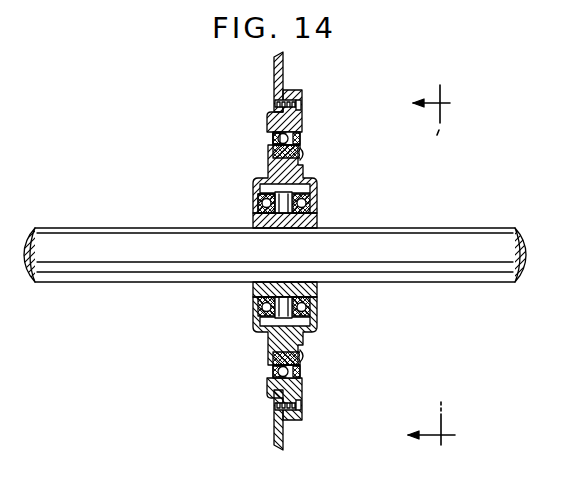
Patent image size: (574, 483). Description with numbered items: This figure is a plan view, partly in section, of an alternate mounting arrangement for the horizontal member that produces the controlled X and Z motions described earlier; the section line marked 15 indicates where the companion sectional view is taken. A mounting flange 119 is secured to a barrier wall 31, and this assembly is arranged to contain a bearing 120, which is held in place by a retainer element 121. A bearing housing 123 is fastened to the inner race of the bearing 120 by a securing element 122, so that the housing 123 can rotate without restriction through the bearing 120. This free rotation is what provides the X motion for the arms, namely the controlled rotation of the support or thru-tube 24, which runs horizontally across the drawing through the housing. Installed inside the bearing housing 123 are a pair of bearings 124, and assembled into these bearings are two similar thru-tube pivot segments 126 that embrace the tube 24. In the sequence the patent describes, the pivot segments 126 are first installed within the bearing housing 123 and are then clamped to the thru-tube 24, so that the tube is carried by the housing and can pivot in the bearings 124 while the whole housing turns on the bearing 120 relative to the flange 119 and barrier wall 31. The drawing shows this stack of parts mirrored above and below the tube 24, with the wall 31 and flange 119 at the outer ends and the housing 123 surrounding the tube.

The thru-tube 24 is at (394, 236).
The barrier wall 31 is at (285, 72).
The mounting flange 119 is at (297, 115).
The bearing 120 is at (277, 135).
The retainer element 121 is at (297, 134).
The element 122 is at (303, 151).
The bearing housing 123 is at (318, 180).
The bearings 124 is at (262, 202).
The thru-tube pivot segments 126 is at (322, 217).
The section line 15- 15 is at (445, 265).